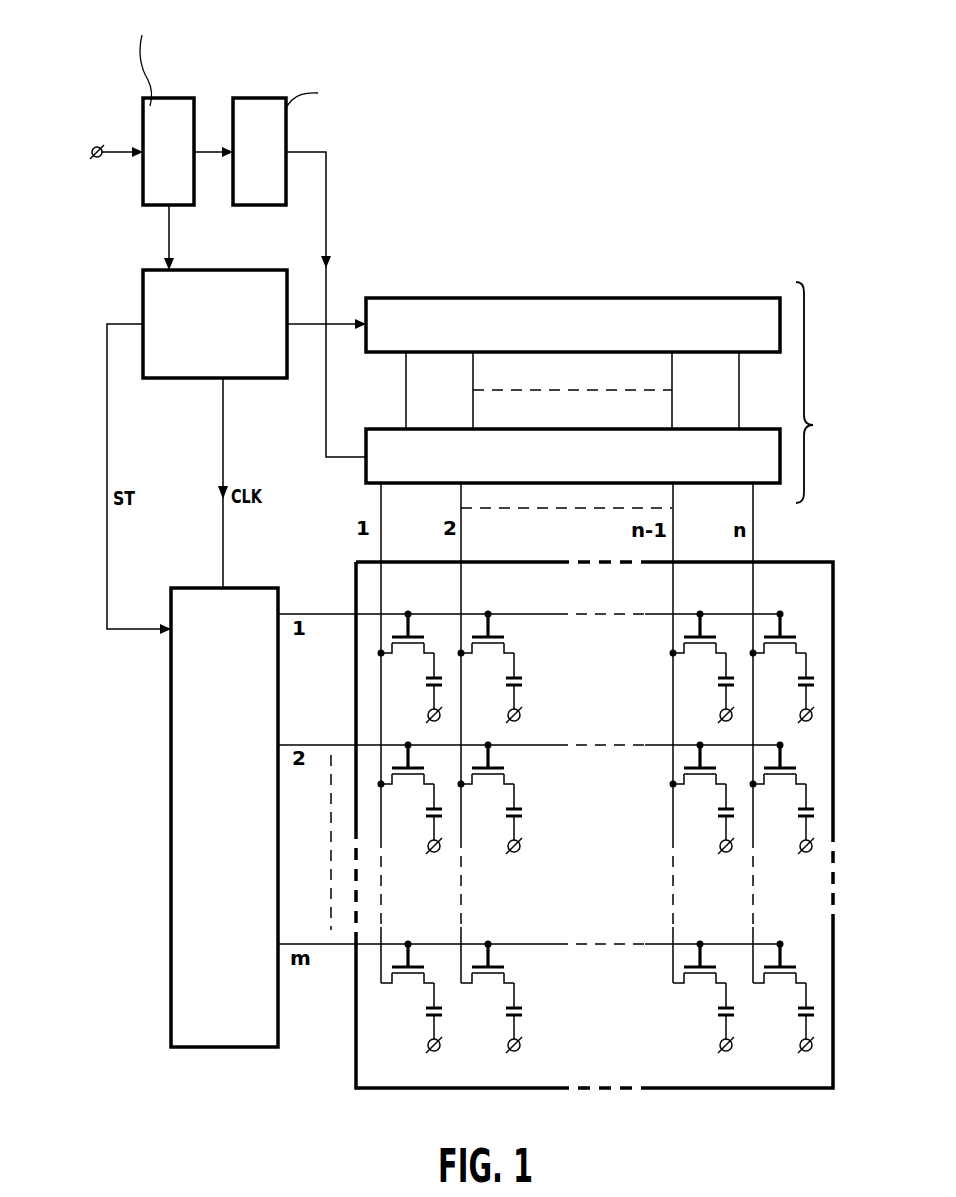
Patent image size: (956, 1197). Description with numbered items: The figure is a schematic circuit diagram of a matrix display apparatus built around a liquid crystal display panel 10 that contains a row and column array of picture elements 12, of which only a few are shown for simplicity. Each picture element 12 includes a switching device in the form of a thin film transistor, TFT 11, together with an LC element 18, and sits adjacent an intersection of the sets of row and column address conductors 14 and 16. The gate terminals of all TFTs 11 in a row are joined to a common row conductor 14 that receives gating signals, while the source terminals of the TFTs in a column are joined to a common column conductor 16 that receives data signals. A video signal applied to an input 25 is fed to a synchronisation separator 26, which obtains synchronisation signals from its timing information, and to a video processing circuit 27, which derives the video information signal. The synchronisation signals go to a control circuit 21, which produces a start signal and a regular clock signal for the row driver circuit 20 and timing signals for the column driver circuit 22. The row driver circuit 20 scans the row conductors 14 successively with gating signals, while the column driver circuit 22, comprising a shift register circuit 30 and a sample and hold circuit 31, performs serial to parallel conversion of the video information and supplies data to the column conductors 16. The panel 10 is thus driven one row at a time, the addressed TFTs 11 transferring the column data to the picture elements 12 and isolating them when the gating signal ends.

The display panel 10 is at (732, 1091).
The thin film transistor 11 is at (491, 616).
The picture element 12 is at (596, 816).
The row address conductor 14 is at (542, 613).
The column address conductor 16 is at (382, 923).
The LC element 18 is at (537, 688).
The row driver circuit 20 is at (171, 844).
The control circuit 21 is at (214, 268).
The column driver circuit 22 is at (627, 379).
The input 25 is at (97, 146).
The synchronisation separator 26 is at (165, 97).
The video processing circuit 27 is at (258, 97).
The shift register circuit 30 is at (689, 296).
The sample and hold circuit 31 is at (766, 428).